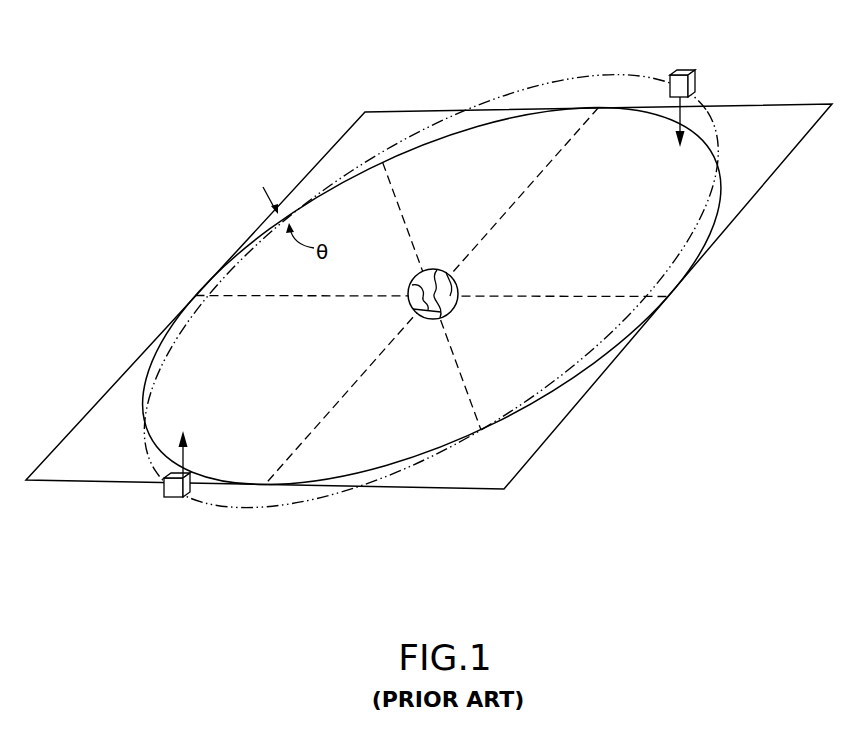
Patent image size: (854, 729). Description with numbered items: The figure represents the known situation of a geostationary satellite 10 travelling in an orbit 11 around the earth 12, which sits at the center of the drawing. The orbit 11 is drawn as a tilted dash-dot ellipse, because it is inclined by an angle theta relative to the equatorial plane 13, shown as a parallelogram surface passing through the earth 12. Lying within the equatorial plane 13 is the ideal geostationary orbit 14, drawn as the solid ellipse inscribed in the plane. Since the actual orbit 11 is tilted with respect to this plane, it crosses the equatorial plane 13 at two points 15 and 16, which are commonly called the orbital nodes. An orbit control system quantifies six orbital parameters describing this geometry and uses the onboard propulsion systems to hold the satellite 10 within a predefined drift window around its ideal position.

The geostationary satellite 10 is at (163, 488).
The orbit 11 is at (527, 90).
The earth 12 is at (458, 288).
The equatorial plane 13 is at (742, 209).
The ideal geostationary orbit 14 is at (565, 386).
The orbital node 15 is at (485, 432).
The orbital node 16 is at (380, 163).